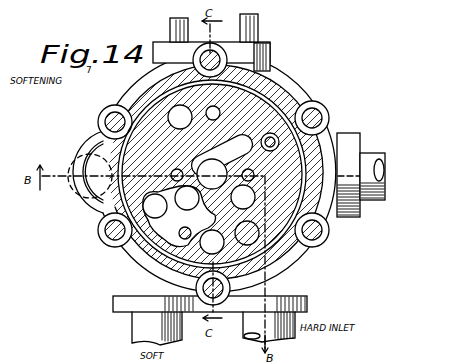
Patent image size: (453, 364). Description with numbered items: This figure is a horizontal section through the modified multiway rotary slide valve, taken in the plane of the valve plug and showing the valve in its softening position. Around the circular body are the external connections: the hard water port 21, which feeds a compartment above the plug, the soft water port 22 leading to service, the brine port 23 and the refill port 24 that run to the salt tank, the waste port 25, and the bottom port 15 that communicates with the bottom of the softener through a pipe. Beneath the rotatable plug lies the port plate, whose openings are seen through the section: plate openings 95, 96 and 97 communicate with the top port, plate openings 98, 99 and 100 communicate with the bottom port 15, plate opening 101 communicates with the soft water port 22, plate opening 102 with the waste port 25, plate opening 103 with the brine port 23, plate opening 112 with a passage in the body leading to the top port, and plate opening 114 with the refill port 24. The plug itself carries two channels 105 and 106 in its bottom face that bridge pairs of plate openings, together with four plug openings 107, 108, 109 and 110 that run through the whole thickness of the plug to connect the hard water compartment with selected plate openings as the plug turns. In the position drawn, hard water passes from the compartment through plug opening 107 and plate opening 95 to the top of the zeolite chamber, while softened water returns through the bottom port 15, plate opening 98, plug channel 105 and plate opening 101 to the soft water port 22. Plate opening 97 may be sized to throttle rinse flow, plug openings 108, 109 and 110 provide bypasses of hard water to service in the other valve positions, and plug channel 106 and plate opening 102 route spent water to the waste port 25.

The bottom port 15 is at (90, 176).
The hard water port 21 is at (260, 309).
The soft water port 22 is at (136, 331).
The brine port 23 is at (259, 23).
The refill port 24 is at (172, 27).
The waste port 25 is at (370, 156).
The plate opening 95 is at (212, 242).
The plate opening 96 is at (341, 220).
The plate opening 97 is at (386, 180).
The plate opening 98 is at (187, 198).
The plate opening 99 is at (91, 172).
The plate opening 100 is at (98, 222).
The plate opening 101 is at (155, 206).
The plate opening 102 is at (212, 174).
The plate opening 103 is at (297, 81).
The plug channel 105 is at (185, 228).
The plug channel 106 is at (222, 155).
The plug opening 107 is at (184, 268).
The plug opening 108 is at (320, 259).
The plug opening 109 is at (302, 97).
The plug opening 110 is at (113, 110).
The plate opening 112 is at (96, 126).
The plate opening 114 is at (211, 52).